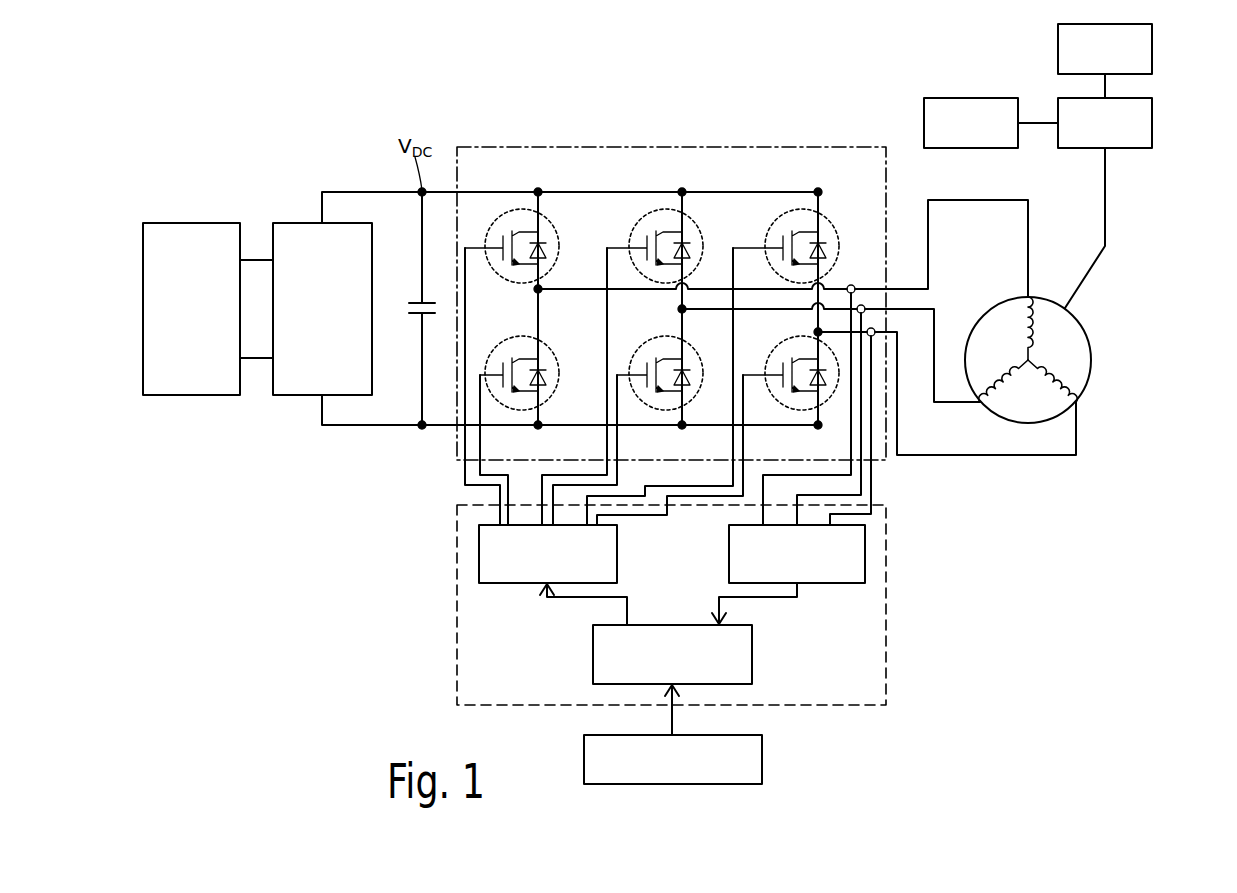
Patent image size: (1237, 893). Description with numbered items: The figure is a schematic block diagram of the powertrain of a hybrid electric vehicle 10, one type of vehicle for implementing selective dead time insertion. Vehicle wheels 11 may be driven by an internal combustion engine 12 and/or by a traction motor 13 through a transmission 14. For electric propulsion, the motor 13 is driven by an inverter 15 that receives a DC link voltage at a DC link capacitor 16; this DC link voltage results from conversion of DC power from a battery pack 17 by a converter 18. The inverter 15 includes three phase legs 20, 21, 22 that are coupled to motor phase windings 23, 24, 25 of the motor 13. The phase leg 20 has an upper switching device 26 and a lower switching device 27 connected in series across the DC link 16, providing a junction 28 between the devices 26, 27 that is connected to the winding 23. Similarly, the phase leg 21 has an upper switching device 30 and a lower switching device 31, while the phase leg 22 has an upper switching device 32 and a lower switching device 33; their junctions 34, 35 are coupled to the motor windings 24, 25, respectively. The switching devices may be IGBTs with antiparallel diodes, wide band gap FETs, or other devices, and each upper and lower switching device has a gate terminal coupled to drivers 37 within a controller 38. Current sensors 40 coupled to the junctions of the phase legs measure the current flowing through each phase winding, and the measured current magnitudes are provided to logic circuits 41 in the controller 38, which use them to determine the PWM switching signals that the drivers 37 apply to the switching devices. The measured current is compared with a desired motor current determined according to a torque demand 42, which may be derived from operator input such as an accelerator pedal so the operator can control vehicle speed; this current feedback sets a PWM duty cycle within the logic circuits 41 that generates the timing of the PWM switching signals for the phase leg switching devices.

The hybrid electric vehicle 10 is at (286, 88).
The vehicle wheels 11 is at (980, 97).
The internal combustion engine 12 is at (1152, 47).
The traction motor 13 is at (1045, 357).
The transmission 14 is at (1152, 123).
The inverter 15 is at (740, 146).
The DC link capacitor 16 is at (418, 300).
The battery pack 17 is at (190, 222).
The converter 18 is at (297, 222).
The phase leg 20 is at (542, 176).
The phase leg 21 is at (686, 176).
The phase leg 22 is at (822, 176).
The motor phase winding 23 is at (1036, 312).
The motor phase winding 24 is at (991, 390).
The motor phase winding 25 is at (1070, 378).
The upper switching device 26 is at (553, 228).
The lower switching device 27 is at (555, 352).
The junction 28 is at (535, 291).
The upper switching device 30 is at (697, 228).
The lower switching device 31 is at (698, 352).
The upper switching device 32 is at (841, 229).
The lower switching device 33 is at (827, 406).
The junction 34 is at (679, 311).
The junction 35 is at (815, 331).
The drivers 37 is at (617, 550).
The controller 38 is at (456, 590).
The current sensors 40 is at (832, 584).
The logic circuits 41 is at (592, 653).
The torque demand 42 is at (762, 758).